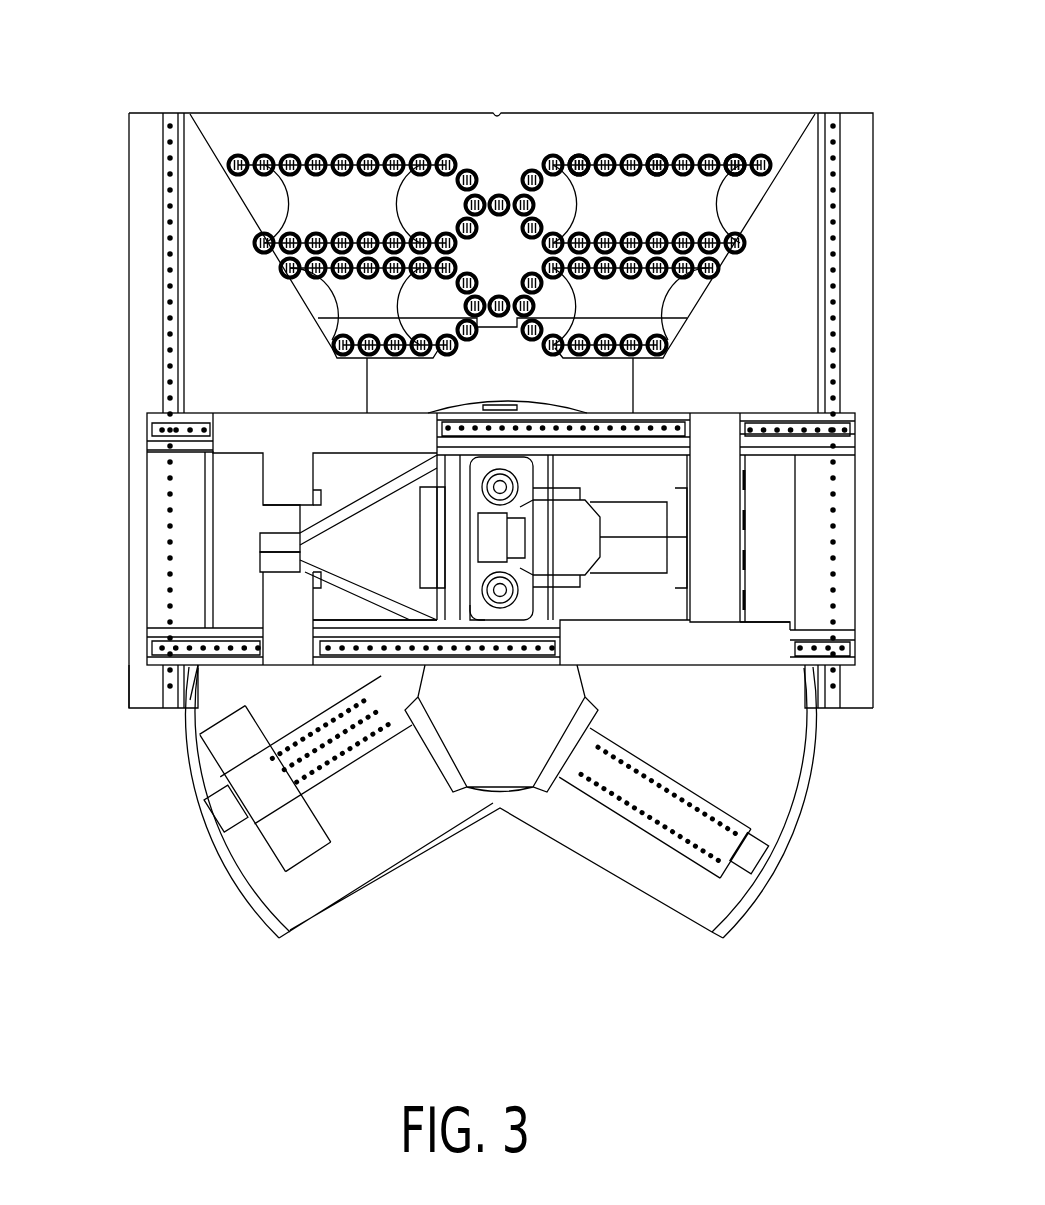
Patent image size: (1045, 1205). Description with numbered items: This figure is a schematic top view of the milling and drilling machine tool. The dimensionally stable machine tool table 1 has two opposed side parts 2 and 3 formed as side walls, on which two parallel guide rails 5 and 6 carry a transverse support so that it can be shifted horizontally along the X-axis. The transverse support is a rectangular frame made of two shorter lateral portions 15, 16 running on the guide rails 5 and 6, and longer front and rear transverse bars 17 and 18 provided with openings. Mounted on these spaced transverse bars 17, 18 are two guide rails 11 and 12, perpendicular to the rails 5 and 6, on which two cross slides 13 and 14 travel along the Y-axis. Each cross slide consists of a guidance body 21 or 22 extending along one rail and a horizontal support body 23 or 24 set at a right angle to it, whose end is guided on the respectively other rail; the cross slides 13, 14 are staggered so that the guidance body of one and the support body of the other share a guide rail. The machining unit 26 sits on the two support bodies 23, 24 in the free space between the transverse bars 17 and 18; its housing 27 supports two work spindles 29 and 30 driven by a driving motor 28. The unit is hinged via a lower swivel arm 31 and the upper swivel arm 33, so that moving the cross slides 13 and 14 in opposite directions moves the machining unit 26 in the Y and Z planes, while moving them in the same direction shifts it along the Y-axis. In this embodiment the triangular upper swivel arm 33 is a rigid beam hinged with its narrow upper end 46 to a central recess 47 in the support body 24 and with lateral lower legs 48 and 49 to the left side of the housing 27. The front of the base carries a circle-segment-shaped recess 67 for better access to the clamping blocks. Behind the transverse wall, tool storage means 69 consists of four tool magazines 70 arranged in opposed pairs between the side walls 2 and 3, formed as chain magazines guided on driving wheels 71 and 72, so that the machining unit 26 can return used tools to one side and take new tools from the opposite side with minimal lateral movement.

The machine tool table 1 is at (880, 359).
The side part 2 is at (862, 677).
The side part 3 is at (150, 698).
The guide rail 5 is at (835, 175).
The guide rail 6 is at (165, 200).
The guide rail 11 is at (845, 648).
The guide rail 12 is at (845, 425).
The cross slide 13 is at (680, 676).
The cross slide 14 is at (262, 398).
The lateral portion 15 is at (828, 532).
The lateral portion 16 is at (170, 546).
The front transverse bar 17 is at (202, 668).
The rear transverse bar 18 is at (662, 415).
The guidance body 21 is at (728, 645).
The guidance body 22 is at (287, 430).
The support body 23 is at (715, 467).
The support body 24 is at (287, 623).
The machining unit 26 is at (433, 542).
The housing 27 is at (481, 612).
The driving motor 28 is at (566, 530).
The work spindle 29 is at (501, 597).
The work spindle 30 is at (503, 482).
The lower swivel arm 31 is at (635, 597).
The upper swivel arm 33 is at (362, 583).
The narrow upper end 46 is at (263, 573).
The central recess 47 is at (265, 542).
The lateral lower leg 48 is at (436, 470).
The lateral lower leg 49 is at (432, 608).
The recess 67 is at (418, 862).
The tool storage means 69 is at (379, 142).
The tool magazine 70 is at (644, 163).
The driving wheel 71 is at (563, 187).
The driving wheel 72 is at (745, 190).